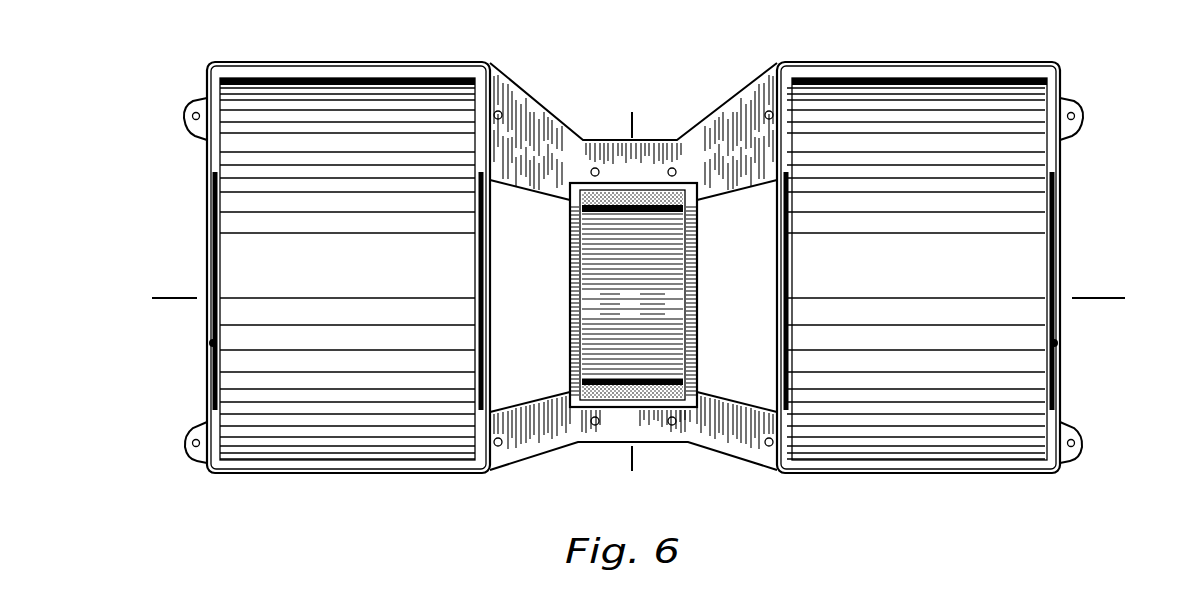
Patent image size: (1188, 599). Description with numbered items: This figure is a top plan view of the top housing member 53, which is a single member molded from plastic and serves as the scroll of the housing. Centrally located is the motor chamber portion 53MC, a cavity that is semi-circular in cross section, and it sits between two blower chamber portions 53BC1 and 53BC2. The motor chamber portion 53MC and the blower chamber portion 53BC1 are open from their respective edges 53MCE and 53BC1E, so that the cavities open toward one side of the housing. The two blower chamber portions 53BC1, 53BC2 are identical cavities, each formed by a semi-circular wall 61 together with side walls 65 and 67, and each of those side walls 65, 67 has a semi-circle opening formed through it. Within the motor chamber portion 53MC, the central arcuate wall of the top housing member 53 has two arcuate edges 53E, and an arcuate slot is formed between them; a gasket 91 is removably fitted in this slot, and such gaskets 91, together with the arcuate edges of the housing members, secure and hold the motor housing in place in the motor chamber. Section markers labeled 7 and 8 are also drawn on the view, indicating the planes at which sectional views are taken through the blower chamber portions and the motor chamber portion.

The blower chamber portion 53BC1 is at (355, 118).
The blower chamber portion 53BC2 is at (918, 118).
The semi-circular wall 61 is at (379, 62).
The side wall 65 is at (207, 152).
The side wall 67 is at (503, 92).
The arcuate edge 53E is at (548, 196).
The motor chamber portion 53MC is at (638, 345).
The gasket 91 is at (633, 218).
The section line 7 is at (180, 292).
The section line 8 is at (624, 127).
The edge 53BC1E is at (246, 7).
The top housing member 53 is at (583, 7).
The edge 53MCE is at (753, 7).